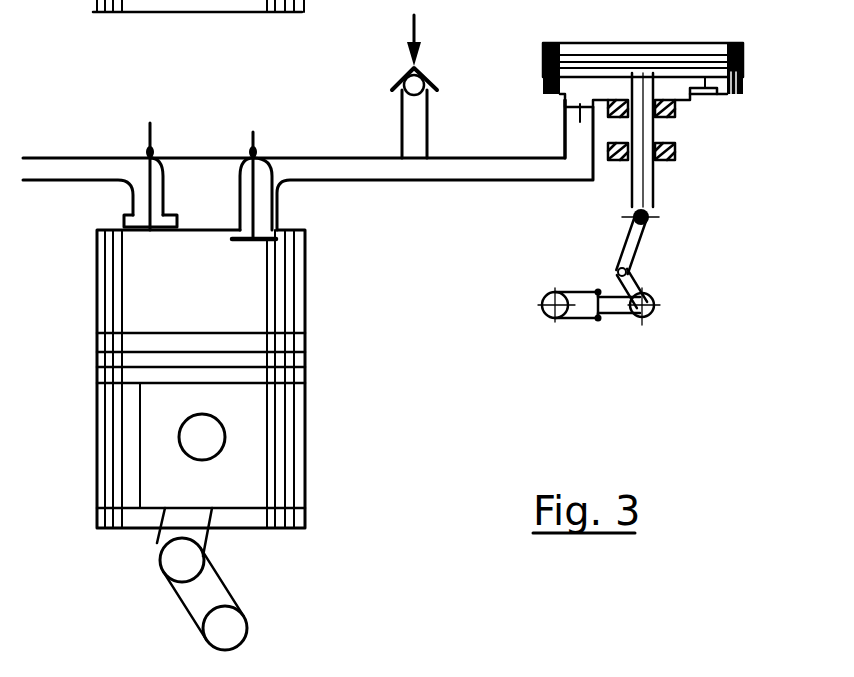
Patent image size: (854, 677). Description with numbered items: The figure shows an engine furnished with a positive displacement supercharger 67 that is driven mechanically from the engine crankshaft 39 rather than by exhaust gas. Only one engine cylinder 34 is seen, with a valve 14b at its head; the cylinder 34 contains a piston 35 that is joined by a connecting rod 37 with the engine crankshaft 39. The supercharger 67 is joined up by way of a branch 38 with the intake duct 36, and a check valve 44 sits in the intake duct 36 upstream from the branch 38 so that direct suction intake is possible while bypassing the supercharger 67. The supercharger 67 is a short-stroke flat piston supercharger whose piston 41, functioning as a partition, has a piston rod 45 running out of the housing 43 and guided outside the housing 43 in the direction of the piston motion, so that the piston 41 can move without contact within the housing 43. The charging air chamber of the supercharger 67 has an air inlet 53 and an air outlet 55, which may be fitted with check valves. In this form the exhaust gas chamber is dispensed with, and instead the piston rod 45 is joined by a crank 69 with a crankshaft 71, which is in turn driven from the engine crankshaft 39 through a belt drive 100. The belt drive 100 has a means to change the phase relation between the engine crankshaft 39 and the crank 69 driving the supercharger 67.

The valve 14b is at (258, 178).
The engine cylinder 34 is at (293, 278).
The piston 35 is at (265, 420).
The intake duct 36 is at (426, 118).
The connecting rod 37 is at (167, 533).
The branch 38 is at (435, 182).
The crankshaft 39 is at (230, 618).
The piston 41 is at (682, 63).
The housing 43 is at (743, 63).
The check valve 44 is at (404, 76).
The piston rod 45 is at (653, 127).
The air inlet 53 is at (705, 98).
The air outlet 55 is at (568, 112).
The supercharger 67 is at (543, 48).
The crank 69 is at (627, 243).
The crankshaft 71 is at (640, 280).
The belt drive 100 is at (578, 318).